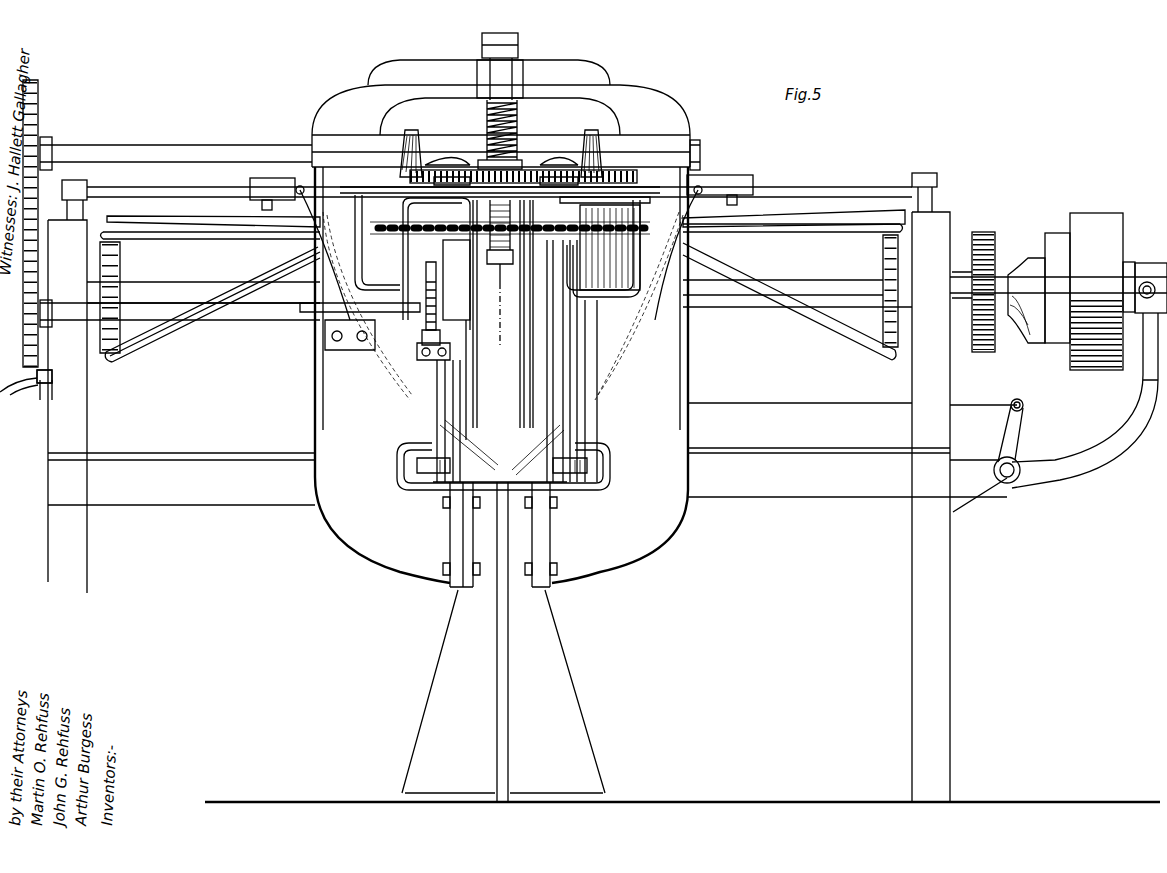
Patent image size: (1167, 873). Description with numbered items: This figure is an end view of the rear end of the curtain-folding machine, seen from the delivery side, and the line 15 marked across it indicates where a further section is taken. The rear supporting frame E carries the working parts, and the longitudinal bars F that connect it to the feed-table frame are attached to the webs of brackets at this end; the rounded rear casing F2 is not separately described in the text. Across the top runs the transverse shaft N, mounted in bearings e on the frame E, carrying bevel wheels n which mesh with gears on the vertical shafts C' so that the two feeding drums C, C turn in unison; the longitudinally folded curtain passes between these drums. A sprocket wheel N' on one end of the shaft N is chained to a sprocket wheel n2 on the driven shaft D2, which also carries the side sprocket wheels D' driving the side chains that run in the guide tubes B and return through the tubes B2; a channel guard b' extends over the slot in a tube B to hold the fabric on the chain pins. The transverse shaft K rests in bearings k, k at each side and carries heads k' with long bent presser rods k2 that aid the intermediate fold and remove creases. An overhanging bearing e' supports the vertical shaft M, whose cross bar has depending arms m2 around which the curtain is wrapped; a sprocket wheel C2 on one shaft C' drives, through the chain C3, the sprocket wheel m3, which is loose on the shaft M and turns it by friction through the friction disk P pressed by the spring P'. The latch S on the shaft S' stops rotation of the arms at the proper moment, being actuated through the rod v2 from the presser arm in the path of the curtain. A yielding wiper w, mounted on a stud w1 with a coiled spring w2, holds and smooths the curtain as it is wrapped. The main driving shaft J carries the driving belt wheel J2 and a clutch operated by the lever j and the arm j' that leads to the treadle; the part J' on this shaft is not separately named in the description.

The adjusting screw 15 is at (522, 38).
The bearings e is at (501, 126).
The overhanging bearing e' is at (489, 72).
The bevel wheels n is at (590, 131).
The vertical shafts C' is at (495, 319).
The spring P' is at (494, 132).
The vertical shaft M is at (513, 129).
The chain C3 is at (535, 168).
The friction disk P is at (485, 210).
The shaft S' is at (461, 254).
The latch S is at (506, 264).
The feeding drums C is at (510, 247).
The sprocket wheel C2 is at (612, 190).
The presser rods k2 is at (490, 465).
The yielding wiper w is at (456, 280).
The spring w2 is at (444, 303).
The stud w1 is at (415, 345).
The depending arms m2 is at (470, 381).
The sprocket wheel m3 is at (536, 353).
The transverse shaft N is at (370, 146).
The sprocket wheel N' is at (41, 231).
The transverse shaft K is at (218, 186).
The bearings k is at (490, 181).
The heads k' is at (496, 258).
The channel guard b' is at (506, 215).
The side guide tubes B is at (208, 240).
The driven shaft D2 is at (180, 295).
The sprocket wheel n2 is at (456, 347).
The rod v2 is at (39, 397).
The side sprocket wheels D' is at (499, 294).
The return tube B2 is at (170, 343).
The longitudinal bars F is at (532, 507).
The casing F2 is at (501, 375).
The rear supporting frame E is at (503, 642).
The main driving shaft J is at (1058, 292).
The cone pulley J' is at (1039, 275).
The driving belt wheel J2 is at (1118, 291).
The lever j is at (1076, 400).
The arm j' is at (1022, 430).